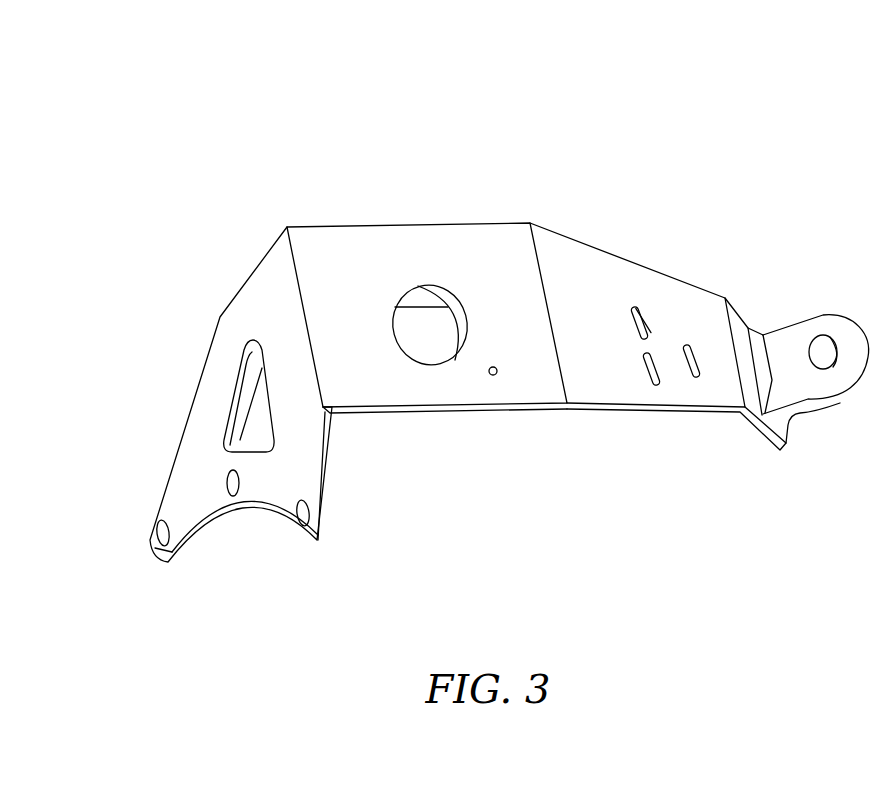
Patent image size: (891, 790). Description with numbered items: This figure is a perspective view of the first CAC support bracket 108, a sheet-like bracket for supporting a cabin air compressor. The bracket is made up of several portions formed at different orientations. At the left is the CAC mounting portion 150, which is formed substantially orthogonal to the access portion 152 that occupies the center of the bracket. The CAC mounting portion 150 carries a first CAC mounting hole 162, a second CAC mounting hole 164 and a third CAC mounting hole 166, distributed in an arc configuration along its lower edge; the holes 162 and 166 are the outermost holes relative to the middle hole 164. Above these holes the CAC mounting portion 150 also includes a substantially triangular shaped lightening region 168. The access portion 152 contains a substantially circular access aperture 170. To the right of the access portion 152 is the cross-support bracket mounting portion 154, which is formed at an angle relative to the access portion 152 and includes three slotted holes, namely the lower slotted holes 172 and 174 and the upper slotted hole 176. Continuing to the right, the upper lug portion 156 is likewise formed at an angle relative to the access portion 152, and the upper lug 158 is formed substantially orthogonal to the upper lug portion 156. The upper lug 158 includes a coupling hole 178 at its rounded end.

The first CAC support bracket 108 is at (242, 133).
The CAC mounting portion 150 is at (198, 425).
The access portion 152 is at (476, 240).
The cross-support bracket mounting portion 154 is at (580, 260).
The upper lug portion 156 is at (750, 335).
The upper lug 158 is at (790, 337).
The first CAC mounting hole 162 is at (167, 560).
The second CAC mounting hole 164 is at (233, 500).
The third CAC mounting hole 166 is at (303, 528).
The lightening region 168 is at (238, 382).
The access aperture 170 is at (434, 366).
The slotted hole 172 is at (652, 388).
The slotted hole 174 is at (638, 300).
The slotted hole 176 is at (694, 380).
The coupling hole 178 is at (826, 362).